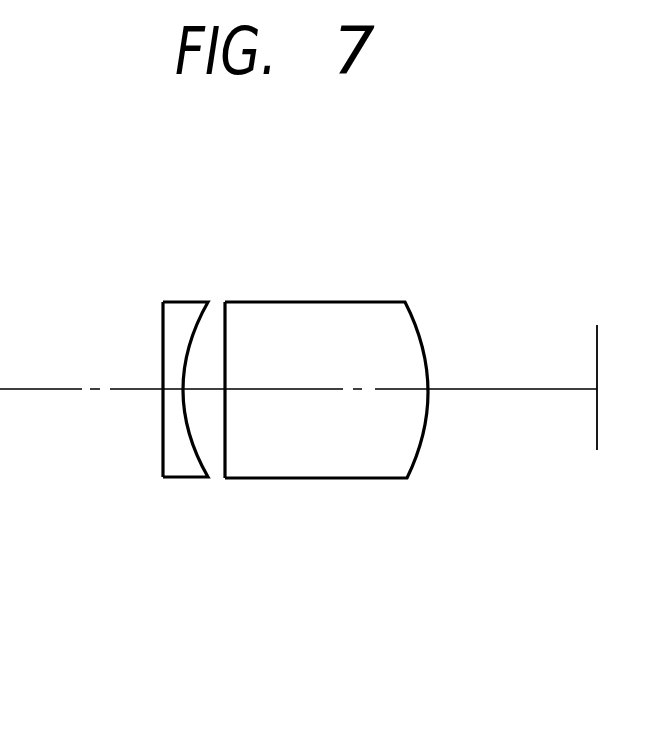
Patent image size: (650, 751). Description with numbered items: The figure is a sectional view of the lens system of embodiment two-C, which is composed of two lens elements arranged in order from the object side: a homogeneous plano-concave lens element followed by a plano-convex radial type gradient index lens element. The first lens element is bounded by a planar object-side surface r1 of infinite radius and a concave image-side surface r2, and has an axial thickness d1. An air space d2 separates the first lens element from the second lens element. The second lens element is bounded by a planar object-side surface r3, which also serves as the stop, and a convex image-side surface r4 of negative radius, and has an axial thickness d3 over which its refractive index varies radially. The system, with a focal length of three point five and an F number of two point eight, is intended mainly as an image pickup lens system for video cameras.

The first lens surface r1 is at (160, 328).
The second lens surface r2 is at (201, 328).
The third lens surface r3 is at (226, 330).
The fourth lens surface r4 is at (419, 333).
The first lens thickness d1 is at (172, 392).
The air space d2 is at (212, 392).
The second lens thickness d3 is at (332, 392).